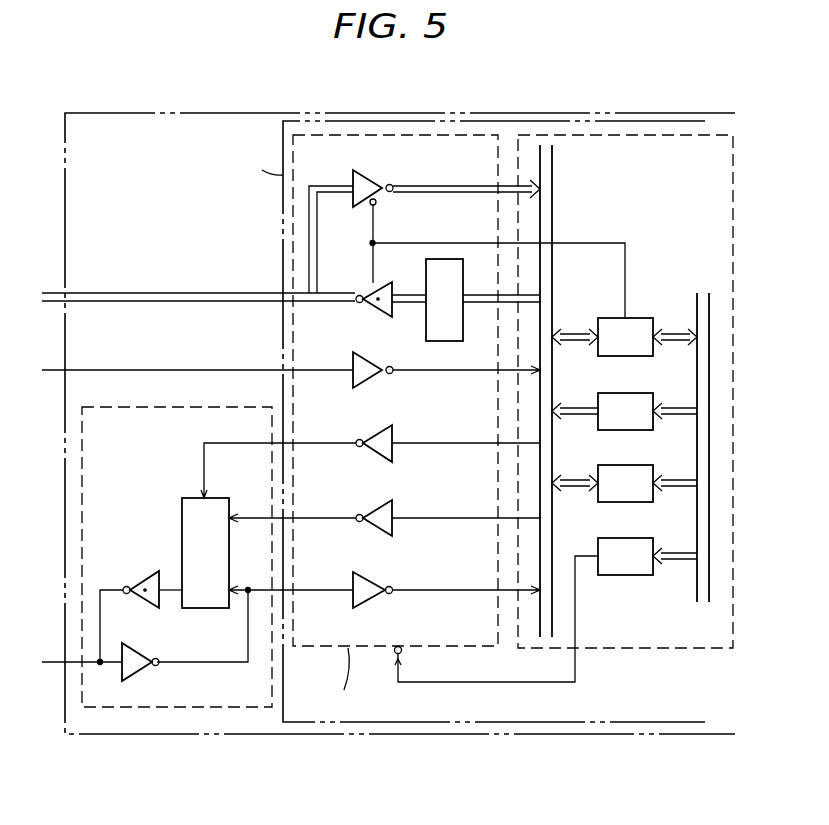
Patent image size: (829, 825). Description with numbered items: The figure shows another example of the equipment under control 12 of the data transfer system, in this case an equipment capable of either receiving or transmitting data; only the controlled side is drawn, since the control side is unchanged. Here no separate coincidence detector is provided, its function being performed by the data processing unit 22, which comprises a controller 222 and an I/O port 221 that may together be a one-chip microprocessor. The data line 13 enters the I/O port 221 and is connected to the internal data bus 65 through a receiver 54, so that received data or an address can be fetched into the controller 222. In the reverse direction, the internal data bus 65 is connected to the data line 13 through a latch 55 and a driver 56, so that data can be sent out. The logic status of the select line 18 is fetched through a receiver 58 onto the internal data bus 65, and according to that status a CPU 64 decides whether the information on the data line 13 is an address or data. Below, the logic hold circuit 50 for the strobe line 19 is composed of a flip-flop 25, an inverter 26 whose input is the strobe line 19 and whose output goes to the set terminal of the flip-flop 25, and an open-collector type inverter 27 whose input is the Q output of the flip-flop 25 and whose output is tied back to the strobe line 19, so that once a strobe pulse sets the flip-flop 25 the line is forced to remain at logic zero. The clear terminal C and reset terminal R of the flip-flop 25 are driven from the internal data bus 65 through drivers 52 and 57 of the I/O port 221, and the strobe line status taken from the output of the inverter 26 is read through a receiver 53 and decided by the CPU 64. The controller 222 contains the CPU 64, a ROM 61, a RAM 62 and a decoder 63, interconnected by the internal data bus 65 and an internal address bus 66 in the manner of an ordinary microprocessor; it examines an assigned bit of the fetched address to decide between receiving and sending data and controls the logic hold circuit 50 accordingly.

The equipment under control 12 is at (245, 113).
The data processing unit 22 is at (283, 143).
The data line 13 is at (48, 293).
The select line 18 is at (48, 370).
The strobe line 19 is at (48, 662).
The logic hold circuit 50 is at (200, 407).
The flip-flop 25 is at (182, 498).
The inverter 26 is at (149, 656).
The open-collector type inverter 27 is at (141, 574).
The driver 52 is at (367, 424).
The receiver 53 is at (380, 570).
The receiver 54 is at (376, 166).
The latch 55 is at (425, 290).
The driver 56 is at (366, 287).
The driver 57 is at (365, 505).
The receiver 58 is at (380, 351).
The ROM 61 is at (640, 393).
The RAM 62 is at (640, 465).
The decoder 63 is at (640, 538).
The CPU 64 is at (640, 318).
The internal data bus 65 is at (552, 620).
The internal address bus 66 is at (697, 584).
The I/O port 221 is at (424, 648).
The controller 222 is at (586, 648).